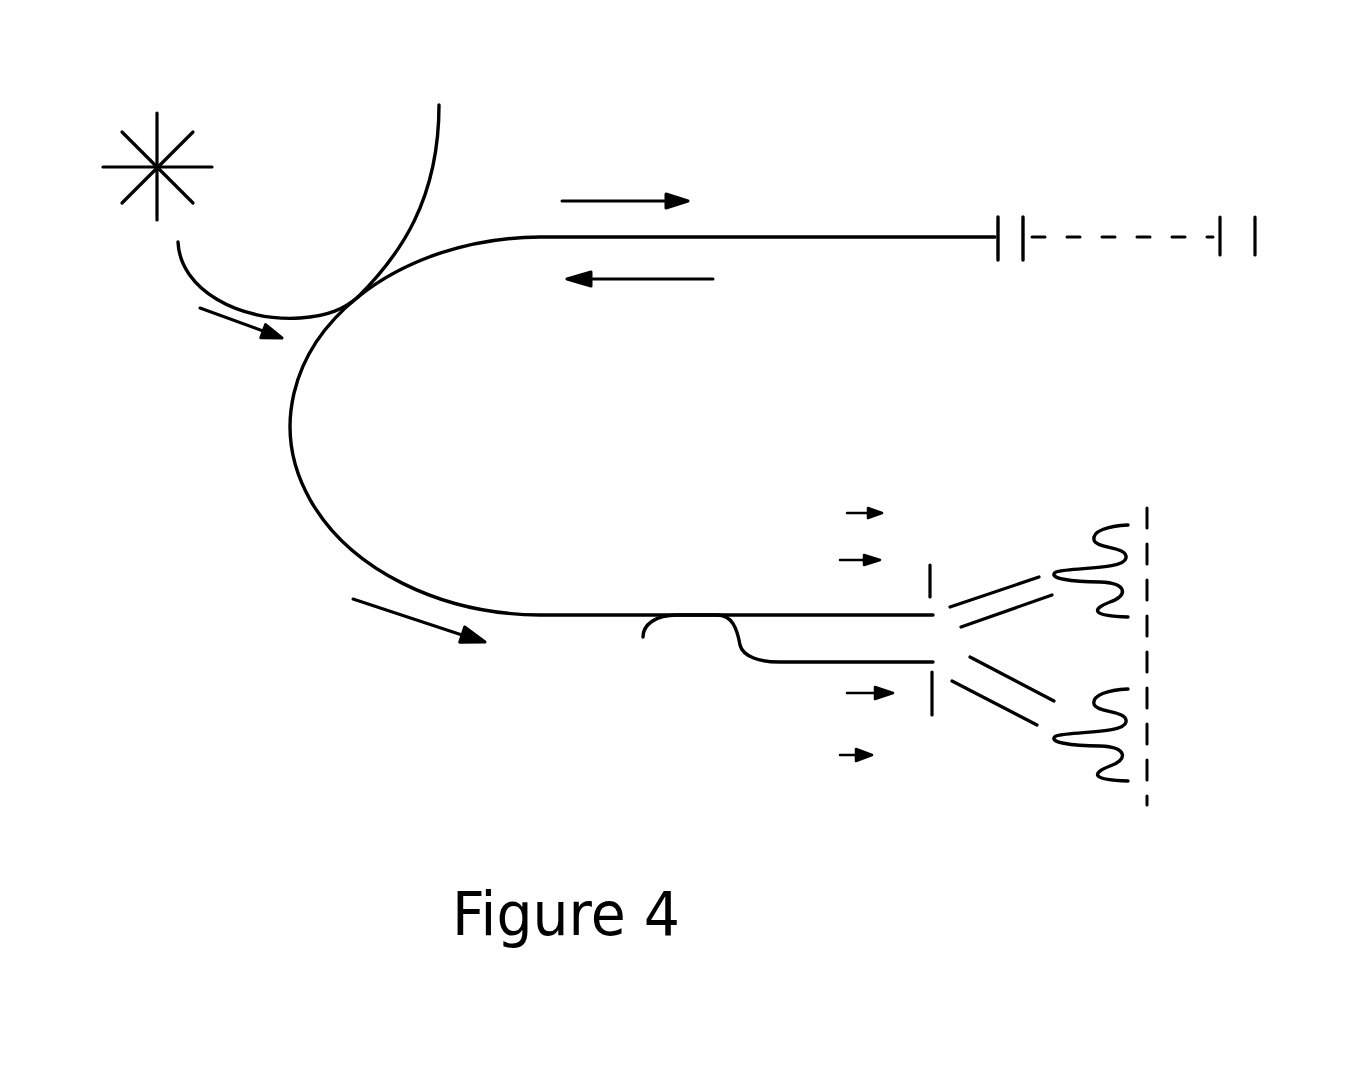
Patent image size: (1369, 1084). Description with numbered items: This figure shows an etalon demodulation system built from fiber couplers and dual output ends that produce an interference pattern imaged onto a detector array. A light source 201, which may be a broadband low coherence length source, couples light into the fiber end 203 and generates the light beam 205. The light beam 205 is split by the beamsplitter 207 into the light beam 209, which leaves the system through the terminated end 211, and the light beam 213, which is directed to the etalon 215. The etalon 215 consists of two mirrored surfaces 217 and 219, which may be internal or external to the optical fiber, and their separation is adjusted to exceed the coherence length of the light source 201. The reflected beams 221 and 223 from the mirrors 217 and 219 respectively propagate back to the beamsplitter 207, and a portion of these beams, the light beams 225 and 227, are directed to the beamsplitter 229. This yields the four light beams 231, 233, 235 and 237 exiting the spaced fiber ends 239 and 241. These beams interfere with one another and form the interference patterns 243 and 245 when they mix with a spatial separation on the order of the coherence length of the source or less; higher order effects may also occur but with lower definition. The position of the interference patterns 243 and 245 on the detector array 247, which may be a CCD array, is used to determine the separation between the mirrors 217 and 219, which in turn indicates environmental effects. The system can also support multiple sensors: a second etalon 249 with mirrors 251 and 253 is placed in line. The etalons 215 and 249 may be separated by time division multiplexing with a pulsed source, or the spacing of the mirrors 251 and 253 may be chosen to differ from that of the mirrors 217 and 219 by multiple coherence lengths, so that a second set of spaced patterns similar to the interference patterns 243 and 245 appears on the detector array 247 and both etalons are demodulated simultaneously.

The light source 201 is at (174, 149).
The fiber end 203 is at (187, 240).
The light beam 205 is at (231, 349).
The beamsplitter 207 is at (642, 426).
The light beam 209 is at (392, 201).
The terminated end 211 is at (460, 103).
The light beam 213 is at (625, 177).
The etalon 215 is at (1015, 257).
The mirrored surface 217 is at (988, 267).
The mirrored surface 219 is at (1037, 272).
The reflected beam 221 is at (640, 305).
The reflected beam 223 is at (638, 373).
The light beam 225 is at (419, 645).
The light beam 227 is at (420, 729).
The beamsplitter 229 is at (788, 613).
The light beam 231 is at (824, 566).
The light beam 233 is at (828, 513).
The light beam 235 is at (833, 696).
The light beam 237 is at (820, 758).
The spaced fiber end 239 is at (986, 574).
The spaced fiber end 241 is at (975, 715).
The interference pattern 243 is at (1090, 526).
The interference pattern 245 is at (1095, 795).
The detector array 247 is at (1161, 559).
The second etalon 249 is at (1182, 223).
The mirror 251 is at (1213, 214).
The mirror 253 is at (1294, 216).